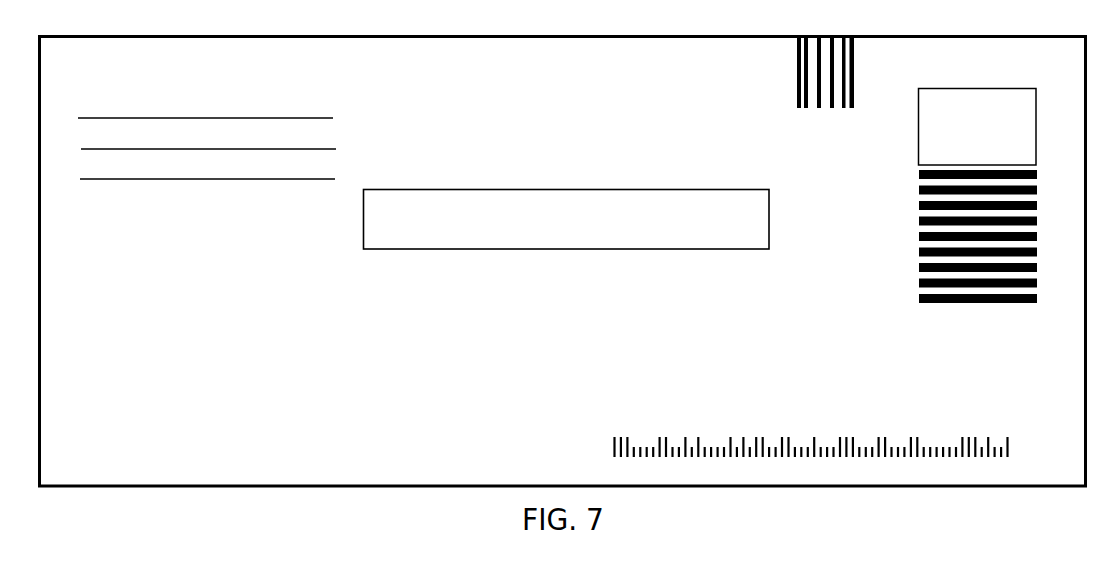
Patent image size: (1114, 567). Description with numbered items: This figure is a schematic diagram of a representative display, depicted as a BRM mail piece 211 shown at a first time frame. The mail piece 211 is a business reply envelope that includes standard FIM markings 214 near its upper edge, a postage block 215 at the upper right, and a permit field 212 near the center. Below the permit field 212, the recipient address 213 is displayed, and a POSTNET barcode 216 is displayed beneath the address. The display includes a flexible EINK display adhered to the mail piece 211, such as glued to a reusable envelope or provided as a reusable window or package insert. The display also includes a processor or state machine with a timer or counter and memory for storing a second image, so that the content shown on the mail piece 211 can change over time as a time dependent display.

The BRM mail piece 211 is at (562, 38).
The permit field 212 is at (507, 190).
The recipient address 213 is at (367, 388).
The FIM markings 214 is at (828, 38).
The postage block 215 is at (1022, 94).
The POSTNET barcode 216 is at (607, 453).